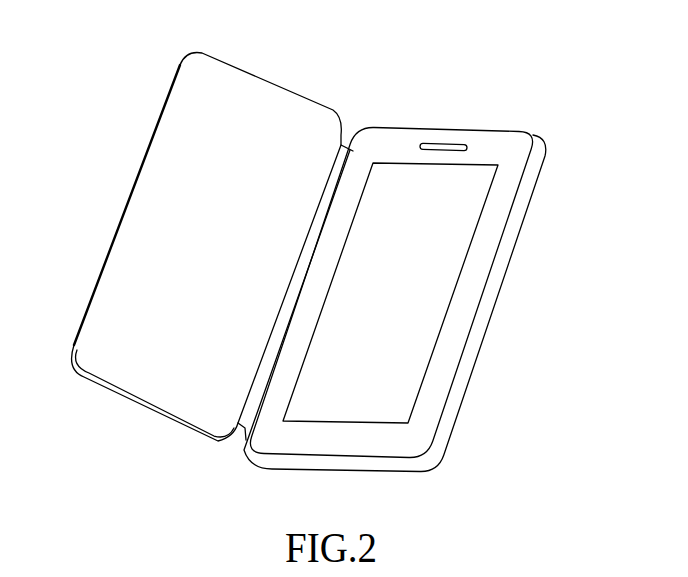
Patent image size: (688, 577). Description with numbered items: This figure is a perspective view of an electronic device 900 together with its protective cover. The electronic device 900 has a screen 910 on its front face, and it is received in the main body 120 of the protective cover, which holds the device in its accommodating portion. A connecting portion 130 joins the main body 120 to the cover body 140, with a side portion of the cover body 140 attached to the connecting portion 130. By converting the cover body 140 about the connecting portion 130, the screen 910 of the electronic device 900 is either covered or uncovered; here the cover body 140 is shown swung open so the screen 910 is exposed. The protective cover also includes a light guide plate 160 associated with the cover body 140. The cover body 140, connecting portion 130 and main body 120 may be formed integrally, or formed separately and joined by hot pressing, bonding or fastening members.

The cover body 140 is at (137, 175).
The light guide plate 160 is at (272, 97).
The electronic device 900 is at (419, 257).
The screen 910 is at (438, 245).
The main body 120 is at (440, 410).
The connecting portion 130 is at (235, 450).